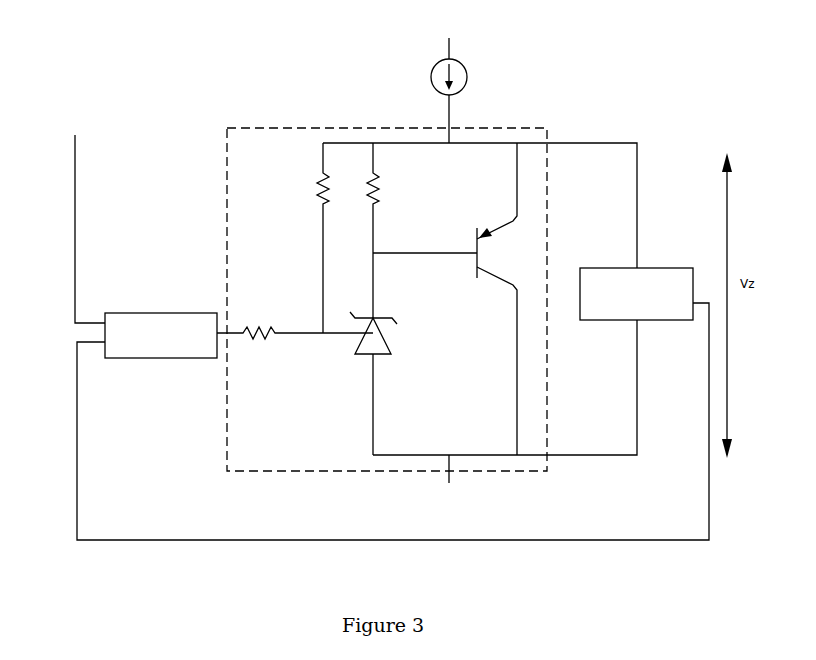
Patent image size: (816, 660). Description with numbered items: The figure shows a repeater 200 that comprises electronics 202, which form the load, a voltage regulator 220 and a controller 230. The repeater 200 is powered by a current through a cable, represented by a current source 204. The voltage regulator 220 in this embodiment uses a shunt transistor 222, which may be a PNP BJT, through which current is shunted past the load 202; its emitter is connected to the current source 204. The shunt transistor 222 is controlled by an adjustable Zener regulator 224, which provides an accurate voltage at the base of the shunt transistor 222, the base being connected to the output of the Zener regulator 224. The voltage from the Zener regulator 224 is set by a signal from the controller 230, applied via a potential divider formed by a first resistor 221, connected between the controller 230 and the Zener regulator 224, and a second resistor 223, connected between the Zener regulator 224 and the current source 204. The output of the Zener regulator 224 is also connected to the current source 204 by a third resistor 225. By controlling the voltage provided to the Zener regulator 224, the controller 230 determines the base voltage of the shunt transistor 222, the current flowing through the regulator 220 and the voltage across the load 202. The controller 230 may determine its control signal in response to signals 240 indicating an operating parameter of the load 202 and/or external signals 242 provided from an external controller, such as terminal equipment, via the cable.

The repeater 200 is at (582, 124).
The electronics 202 is at (655, 267).
The current source 204 is at (430, 75).
The voltage regulator 220 is at (266, 128).
The first resistor 221 is at (272, 328).
The shunt transistor 222 is at (475, 238).
The second resistor 223 is at (320, 177).
The adjustable Zener regulator 224 is at (362, 357).
The third resistor 225 is at (380, 190).
The controller 230 is at (173, 311).
The signals indicating an operating parameter of the load 240 is at (393, 439).
The external signals 242 is at (67, 229).